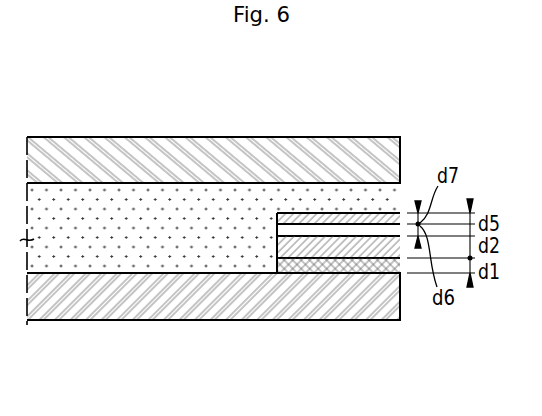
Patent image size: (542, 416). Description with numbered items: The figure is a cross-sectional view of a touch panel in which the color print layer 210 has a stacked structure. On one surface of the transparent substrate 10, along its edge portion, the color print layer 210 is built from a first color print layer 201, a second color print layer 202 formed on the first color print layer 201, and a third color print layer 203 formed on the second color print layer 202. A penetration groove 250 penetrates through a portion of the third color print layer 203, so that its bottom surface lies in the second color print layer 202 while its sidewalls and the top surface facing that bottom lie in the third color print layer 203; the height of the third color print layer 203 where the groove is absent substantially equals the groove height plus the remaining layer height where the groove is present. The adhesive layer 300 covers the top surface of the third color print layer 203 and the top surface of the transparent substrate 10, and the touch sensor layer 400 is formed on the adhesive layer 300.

The transparent substrate 10 is at (148, 312).
The adhesive layer 300 is at (245, 203).
The touch sensor layer 400 is at (163, 137).
The color print layer 210 is at (323, 311).
The first color print layer 201 is at (360, 265).
The second color print layer 202 is at (378, 248).
The third color print layer 203 is at (323, 219).
The penetration groove 250 is at (284, 231).